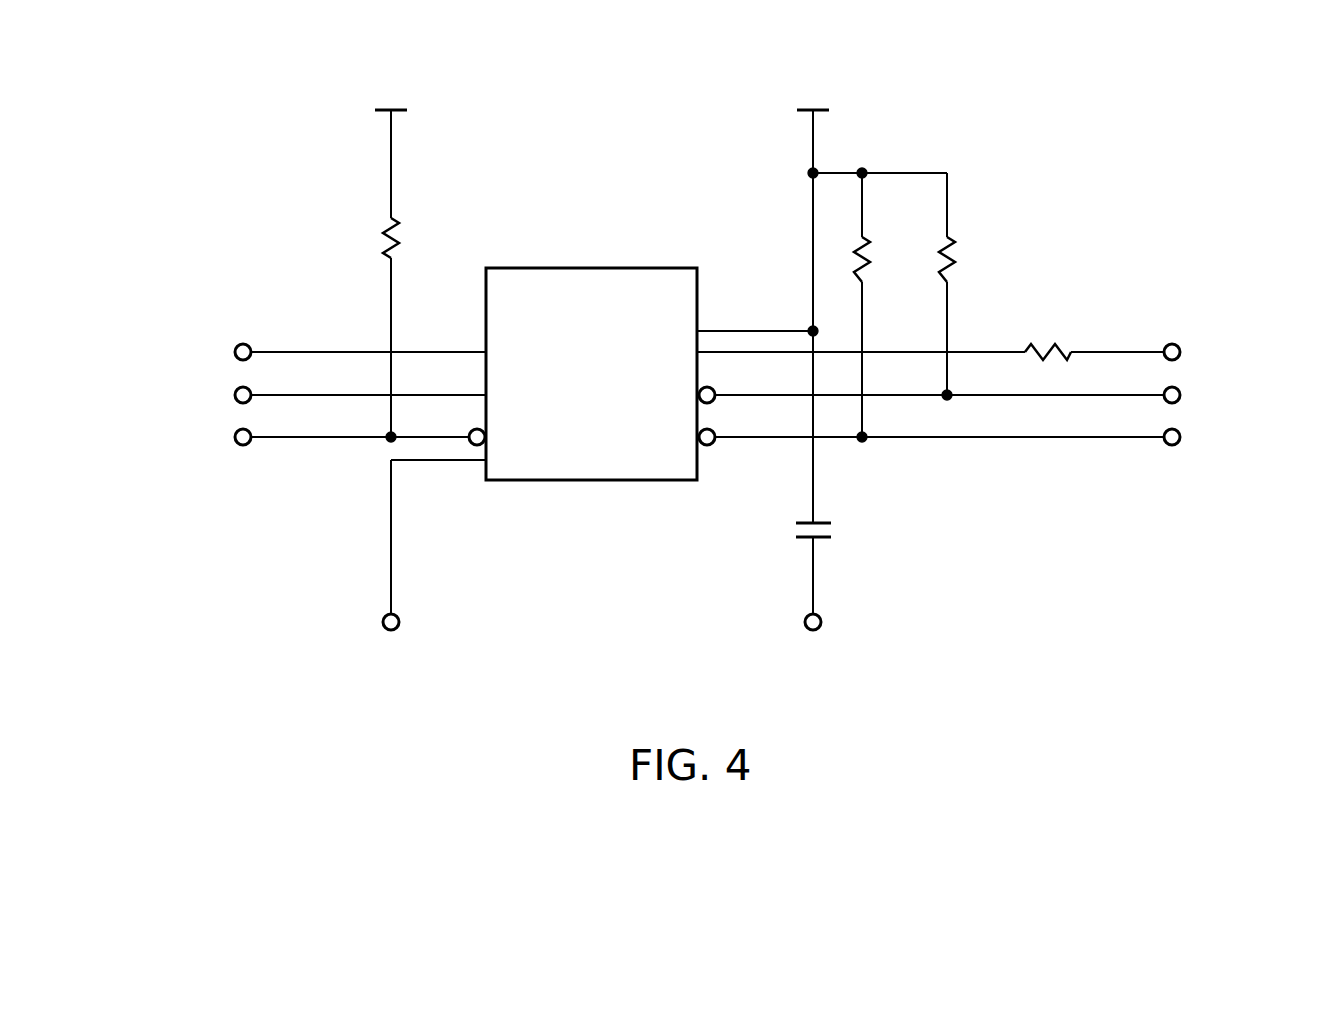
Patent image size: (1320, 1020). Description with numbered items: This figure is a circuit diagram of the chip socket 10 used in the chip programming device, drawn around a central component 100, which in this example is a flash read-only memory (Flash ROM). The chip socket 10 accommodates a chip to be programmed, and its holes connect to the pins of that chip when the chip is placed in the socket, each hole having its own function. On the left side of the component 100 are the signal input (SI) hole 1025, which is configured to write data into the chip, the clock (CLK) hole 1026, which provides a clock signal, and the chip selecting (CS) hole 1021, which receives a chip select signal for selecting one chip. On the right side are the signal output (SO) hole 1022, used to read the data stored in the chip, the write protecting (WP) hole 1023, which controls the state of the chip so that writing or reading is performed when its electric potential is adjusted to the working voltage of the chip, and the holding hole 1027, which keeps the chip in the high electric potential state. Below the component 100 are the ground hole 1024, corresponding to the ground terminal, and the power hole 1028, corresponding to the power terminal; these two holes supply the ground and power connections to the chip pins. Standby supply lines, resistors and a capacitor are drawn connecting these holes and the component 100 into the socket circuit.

The chip socket 10 is at (248, 76).
The component 100 is at (592, 268).
The chip selecting (CS) hole 1021 is at (234, 437).
The signal output (SO) hole 1022 is at (1181, 352).
The write protecting (WP) hole 1023 is at (1181, 395).
The ground hole 1024 is at (392, 631).
The signal input (SI) hole 1025 is at (234, 352).
The clock (CLK) hole 1026 is at (234, 395).
The holding hole 1027 is at (1181, 437).
The power hole 1028 is at (814, 631).